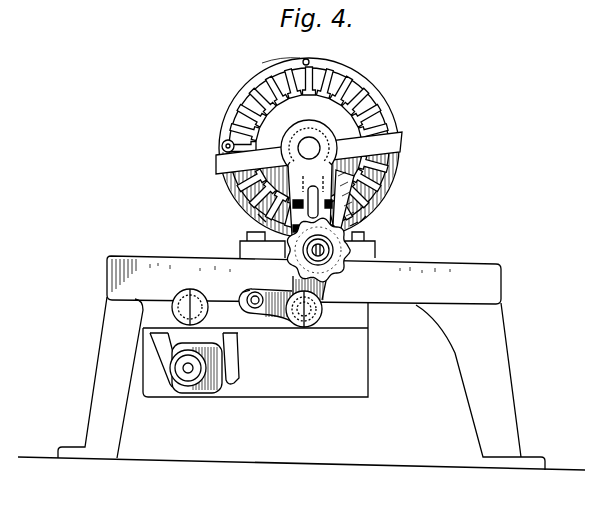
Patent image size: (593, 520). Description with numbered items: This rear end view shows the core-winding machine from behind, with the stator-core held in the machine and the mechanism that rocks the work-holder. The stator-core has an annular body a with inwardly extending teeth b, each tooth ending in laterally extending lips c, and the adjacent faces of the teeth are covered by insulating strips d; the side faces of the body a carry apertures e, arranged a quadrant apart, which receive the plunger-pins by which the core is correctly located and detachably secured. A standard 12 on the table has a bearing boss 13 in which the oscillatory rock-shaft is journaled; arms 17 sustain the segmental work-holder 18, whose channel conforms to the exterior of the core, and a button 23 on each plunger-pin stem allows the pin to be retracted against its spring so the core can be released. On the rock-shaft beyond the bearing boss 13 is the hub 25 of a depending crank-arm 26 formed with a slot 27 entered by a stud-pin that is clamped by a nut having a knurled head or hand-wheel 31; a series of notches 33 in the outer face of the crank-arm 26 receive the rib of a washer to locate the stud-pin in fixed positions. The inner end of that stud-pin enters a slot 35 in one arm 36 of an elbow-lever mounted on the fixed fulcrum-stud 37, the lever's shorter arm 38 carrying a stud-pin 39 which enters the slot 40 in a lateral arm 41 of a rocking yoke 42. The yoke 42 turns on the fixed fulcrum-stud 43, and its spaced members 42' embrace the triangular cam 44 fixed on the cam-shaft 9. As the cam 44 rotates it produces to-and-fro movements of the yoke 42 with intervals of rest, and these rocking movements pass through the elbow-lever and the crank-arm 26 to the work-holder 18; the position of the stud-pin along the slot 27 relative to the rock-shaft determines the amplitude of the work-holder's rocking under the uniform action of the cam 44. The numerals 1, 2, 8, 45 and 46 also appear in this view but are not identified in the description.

The annular body a is at (368, 87).
The inwardly extending teeth b is at (350, 75).
The laterally extending lips c is at (256, 133).
The insulating strips d is at (278, 73).
The apertures e is at (307, 59).
The base plate 1 is at (158, 260).
The supporting legs 2 is at (301, 383).
The lower housing block 8 is at (255, 350).
The cam-shaft 9 is at (188, 368).
The standard 12 is at (300, 215).
The bearing boss 13 is at (305, 120).
The arms 17 is at (309, 153).
The segmental work-holder 18 is at (365, 190).
The button 23 is at (222, 146).
The hub 25 is at (324, 128).
The crank-arm 26 is at (300, 182).
The slot 27 is at (313, 190).
The hand-wheel 31 is at (340, 263).
The notches 33 is at (262, 220).
The slot 35 is at (343, 196).
The arm 36 is at (356, 225).
The fixed fulcrum-stud 37 is at (323, 318).
The shorter arm 38 is at (289, 305).
The stud-pin 39 is at (255, 292).
The slot 40 is at (265, 309).
The lateral arm 41 is at (246, 290).
The rocking yoke 42 is at (190, 321).
The spaced members 42' is at (207, 376).
The fixed fulcrum-stud 43 is at (200, 317).
The triangular cam 44 is at (220, 395).
The posts 45 is at (249, 234).
The mounting blocks 46 is at (307, 250).